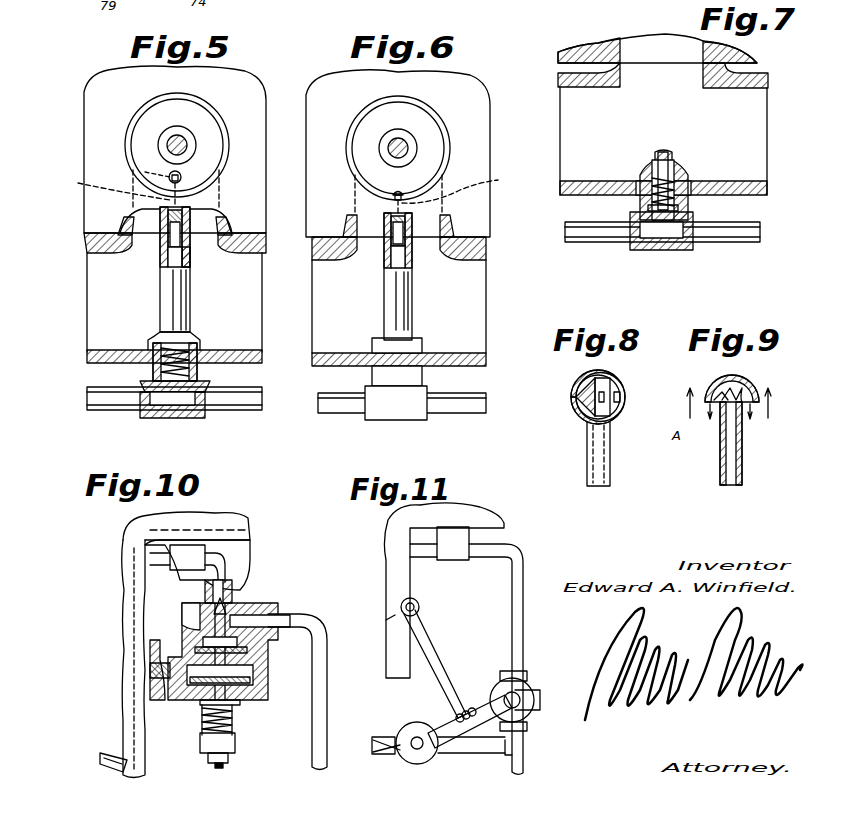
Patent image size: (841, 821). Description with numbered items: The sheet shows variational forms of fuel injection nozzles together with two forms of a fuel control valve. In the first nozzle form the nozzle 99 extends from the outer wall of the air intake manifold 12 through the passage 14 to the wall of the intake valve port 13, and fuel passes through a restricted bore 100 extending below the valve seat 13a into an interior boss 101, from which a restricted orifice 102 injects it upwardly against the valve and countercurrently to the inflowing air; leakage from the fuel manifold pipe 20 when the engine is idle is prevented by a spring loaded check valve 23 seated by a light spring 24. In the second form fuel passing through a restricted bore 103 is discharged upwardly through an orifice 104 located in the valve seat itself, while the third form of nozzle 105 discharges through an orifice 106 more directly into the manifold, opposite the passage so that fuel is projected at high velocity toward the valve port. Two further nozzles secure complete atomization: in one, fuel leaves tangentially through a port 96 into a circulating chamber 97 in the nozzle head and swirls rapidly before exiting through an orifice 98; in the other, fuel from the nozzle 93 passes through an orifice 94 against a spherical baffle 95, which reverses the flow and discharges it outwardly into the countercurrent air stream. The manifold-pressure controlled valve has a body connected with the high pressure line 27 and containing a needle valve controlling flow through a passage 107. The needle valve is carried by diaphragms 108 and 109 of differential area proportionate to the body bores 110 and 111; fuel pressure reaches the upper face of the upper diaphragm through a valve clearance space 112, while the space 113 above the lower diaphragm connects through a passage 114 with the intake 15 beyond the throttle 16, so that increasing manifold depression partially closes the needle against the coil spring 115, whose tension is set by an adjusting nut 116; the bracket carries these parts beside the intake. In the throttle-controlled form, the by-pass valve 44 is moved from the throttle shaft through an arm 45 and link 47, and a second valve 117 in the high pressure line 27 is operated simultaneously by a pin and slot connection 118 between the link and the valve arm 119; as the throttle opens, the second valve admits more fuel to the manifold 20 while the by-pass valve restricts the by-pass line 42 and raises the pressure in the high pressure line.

In FIG. 5, the air intake manifold 12 is at (87, 355).
In FIG. 6, the air intake manifold 12 is at (335, 350).
In FIG. 7, the air intake manifold 12 is at (572, 154).
In FIG. 5, the intake valve port 13 is at (212, 137).
In FIG. 6, the intake valve port 13 is at (432, 145).
In FIG. 5, the valve seat 13a is at (223, 147).
In FIG. 5, the passage 14 is at (150, 222).
In FIG. 6, the passage 14 is at (425, 222).
In FIG. 10, the intake 15 is at (135, 732).
In FIG. 10, the throttle 16 is at (120, 750).
In FIG. 5, the fuel manifold pipe 20 is at (232, 410).
In FIG. 6, the fuel manifold pipe 20 is at (342, 407).
In FIG. 7, the fuel manifold pipe 20 is at (595, 232).
In FIG. 10, the fuel manifold pipe 20 is at (225, 560).
In FIG. 11, the fuel manifold pipe 20 is at (423, 550).
In FIG. 5, the spring loaded check valve 23 is at (199, 373).
In FIG. 5, the spring 24 is at (153, 368).
In FIG. 10, the high pressure line 27 is at (327, 694).
In FIG. 11, the high pressure line 27 is at (503, 633).
In FIG. 11, the by-pass line 42 is at (455, 745).
In FIG. 11, the by-pass valve 44 is at (417, 728).
In FIG. 11, the arm 45 is at (405, 598).
In FIG. 11, the link 47 is at (440, 655).
In FIG. 9, the nozzle 93 is at (742, 438).
In FIG. 9, the orifice 94 is at (748, 384).
In FIG. 9, the spherical baffle 95 is at (722, 382).
In FIG. 8, the port 96 is at (574, 398).
In FIG. 8, the circulating chamber 97 is at (612, 382).
In FIG. 8, the orifice 98 is at (622, 397).
In FIG. 5, the nozzle 99 is at (188, 287).
In FIG. 6, the nozzle 99 is at (412, 300).
In FIG. 5, the restricted bore 100 is at (130, 189).
In FIG. 5, the interior boss 101 is at (145, 172).
In FIG. 5, the restricted orifice 102 is at (183, 177).
In FIG. 6, the restricted bore 103 is at (441, 194).
In FIG. 6, the orifice 104 is at (355, 198).
In FIG. 7, the nozzle / valve body 105 is at (690, 175).
In FIG. 10, the nozzle / valve body 105 is at (265, 618).
In FIG. 7, the orifice / needle valve 106 is at (668, 160).
In FIG. 10, the orifice / needle valve 106 is at (214, 635).
In FIG. 10, the passage 107 is at (200, 593).
In FIG. 10, the diaphragm 108 is at (248, 650).
In FIG. 10, the diaphragm 109 is at (250, 678).
In FIG. 10, the body bore 110 is at (203, 642).
In FIG. 10, the body bore 111 is at (188, 704).
In FIG. 10, the valve clearance space 112 is at (190, 614).
In FIG. 10, the space 113 is at (255, 668).
In FIG. 10, the passage 114 is at (135, 703).
In FIG. 10, the coil spring 115 is at (233, 720).
In FIG. 10, the adjusting nut 116 is at (235, 740).
In FIG. 11, the second valve 117 is at (538, 703).
In FIG. 11, the pin and slot connection 118 is at (460, 714).
In FIG. 11, the valve arm 119 is at (478, 708).